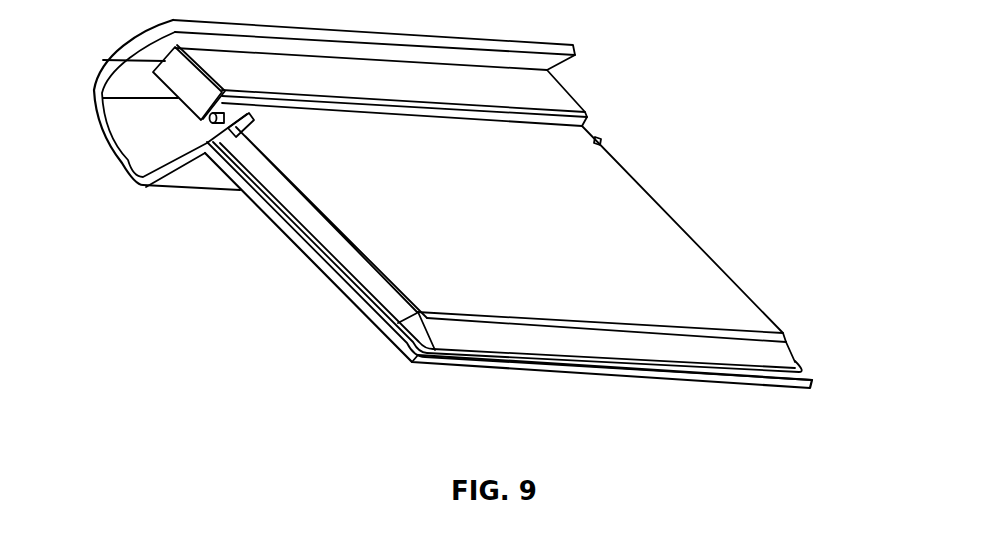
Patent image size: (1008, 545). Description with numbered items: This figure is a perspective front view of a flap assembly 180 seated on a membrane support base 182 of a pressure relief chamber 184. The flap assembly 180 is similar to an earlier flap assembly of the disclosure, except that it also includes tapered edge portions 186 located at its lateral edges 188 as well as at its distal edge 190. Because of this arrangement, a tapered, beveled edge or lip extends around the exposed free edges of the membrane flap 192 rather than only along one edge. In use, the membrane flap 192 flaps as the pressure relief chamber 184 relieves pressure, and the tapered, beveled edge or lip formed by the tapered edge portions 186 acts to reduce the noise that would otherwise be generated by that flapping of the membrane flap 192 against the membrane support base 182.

The flap assembly 180 is at (492, 288).
The membrane support base 182 is at (542, 274).
The pressure relief chamber 184 is at (125, 163).
The tapered edge portions 186 is at (332, 269).
The lateral edges 188 is at (317, 210).
The distal edge 190 is at (652, 350).
The membrane flap 192 is at (560, 188).